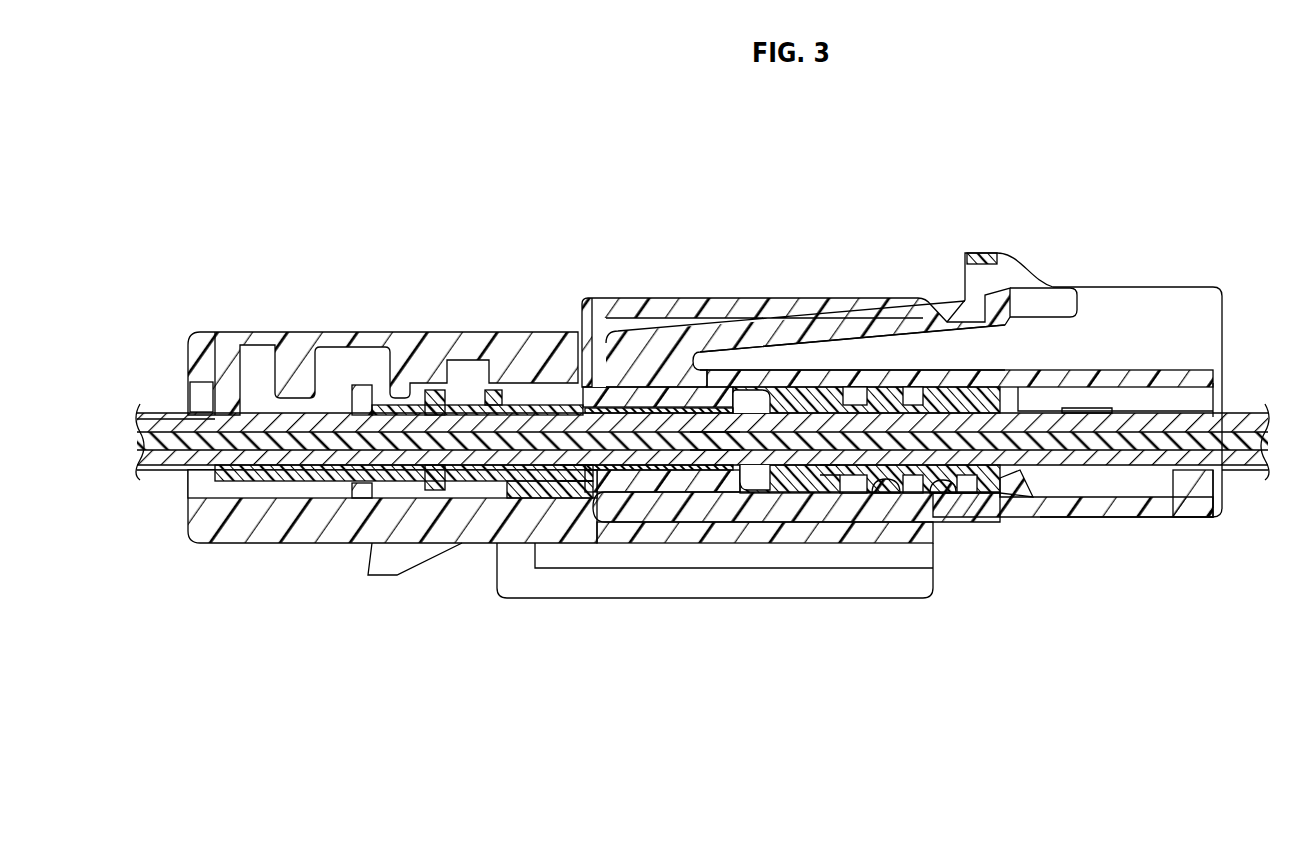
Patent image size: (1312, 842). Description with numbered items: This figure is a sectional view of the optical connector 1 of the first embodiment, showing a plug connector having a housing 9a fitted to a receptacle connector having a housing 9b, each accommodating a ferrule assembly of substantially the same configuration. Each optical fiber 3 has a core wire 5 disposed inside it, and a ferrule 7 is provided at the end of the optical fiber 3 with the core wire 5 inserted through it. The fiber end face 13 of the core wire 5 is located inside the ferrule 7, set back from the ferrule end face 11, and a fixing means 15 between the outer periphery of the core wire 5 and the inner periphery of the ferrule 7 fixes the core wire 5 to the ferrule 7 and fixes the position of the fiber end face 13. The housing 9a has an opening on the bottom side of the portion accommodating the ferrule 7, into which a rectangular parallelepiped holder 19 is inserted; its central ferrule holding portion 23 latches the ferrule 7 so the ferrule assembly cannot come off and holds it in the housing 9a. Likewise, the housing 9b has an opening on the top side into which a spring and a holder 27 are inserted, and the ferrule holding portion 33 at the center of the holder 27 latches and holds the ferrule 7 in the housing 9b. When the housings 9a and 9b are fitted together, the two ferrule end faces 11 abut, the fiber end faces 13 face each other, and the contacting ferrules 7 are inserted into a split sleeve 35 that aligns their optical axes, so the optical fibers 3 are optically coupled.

The optical connector 1 is at (782, 183).
The optical fiber 3 is at (172, 410).
The core wire 5 is at (580, 483).
The ferrule 7 is at (538, 405).
The housing of plug connector 9a is at (1097, 287).
The housing of receptacle connector 9b is at (610, 297).
The ferrule end face 11 is at (722, 392).
The fiber end face 13 is at (647, 472).
The fixing means 15 is at (705, 455).
The holder 19 is at (1013, 519).
The ferrule holding portion 23 is at (883, 498).
The holder 27 is at (308, 332).
The ferrule holding portion 33 is at (402, 385).
The split sleeve 35 is at (645, 408).